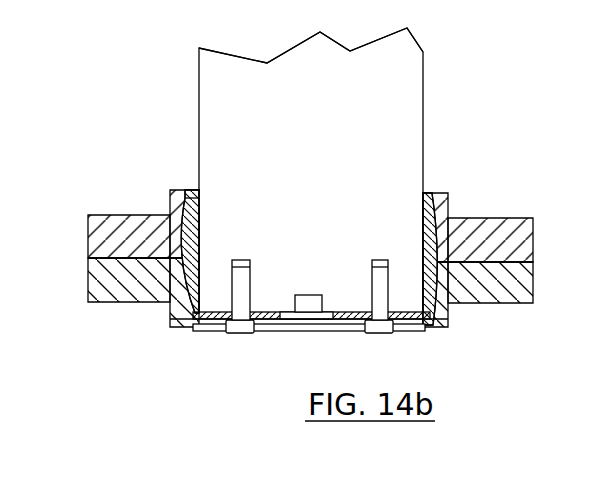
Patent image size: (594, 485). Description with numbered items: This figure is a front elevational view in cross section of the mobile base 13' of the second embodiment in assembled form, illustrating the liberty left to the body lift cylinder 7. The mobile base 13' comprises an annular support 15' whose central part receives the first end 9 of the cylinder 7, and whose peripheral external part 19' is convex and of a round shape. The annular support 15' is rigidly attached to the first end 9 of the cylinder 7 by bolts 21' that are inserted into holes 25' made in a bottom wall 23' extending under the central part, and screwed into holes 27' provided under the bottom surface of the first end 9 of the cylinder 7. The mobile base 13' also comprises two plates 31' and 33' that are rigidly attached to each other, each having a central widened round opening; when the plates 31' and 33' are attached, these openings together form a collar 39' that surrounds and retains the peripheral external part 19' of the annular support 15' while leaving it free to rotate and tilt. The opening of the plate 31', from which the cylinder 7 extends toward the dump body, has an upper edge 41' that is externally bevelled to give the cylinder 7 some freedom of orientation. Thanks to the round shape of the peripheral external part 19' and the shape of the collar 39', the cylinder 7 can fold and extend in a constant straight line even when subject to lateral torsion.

The cylinder 7 is at (429, 81).
The first end of the cylinder 9 is at (423, 160).
The mobile base 13' is at (337, 191).
The annular support 15' is at (460, 276).
The peripheral external part 19' is at (315, 266).
The bolts 21' is at (309, 357).
The bottom wall 23' is at (294, 280).
The holes 25' is at (299, 351).
The holes 27' is at (315, 259).
The plate 31' is at (334, 221).
The plate 33' is at (334, 309).
The collar 39' is at (161, 242).
The upper edge 41' is at (166, 158).